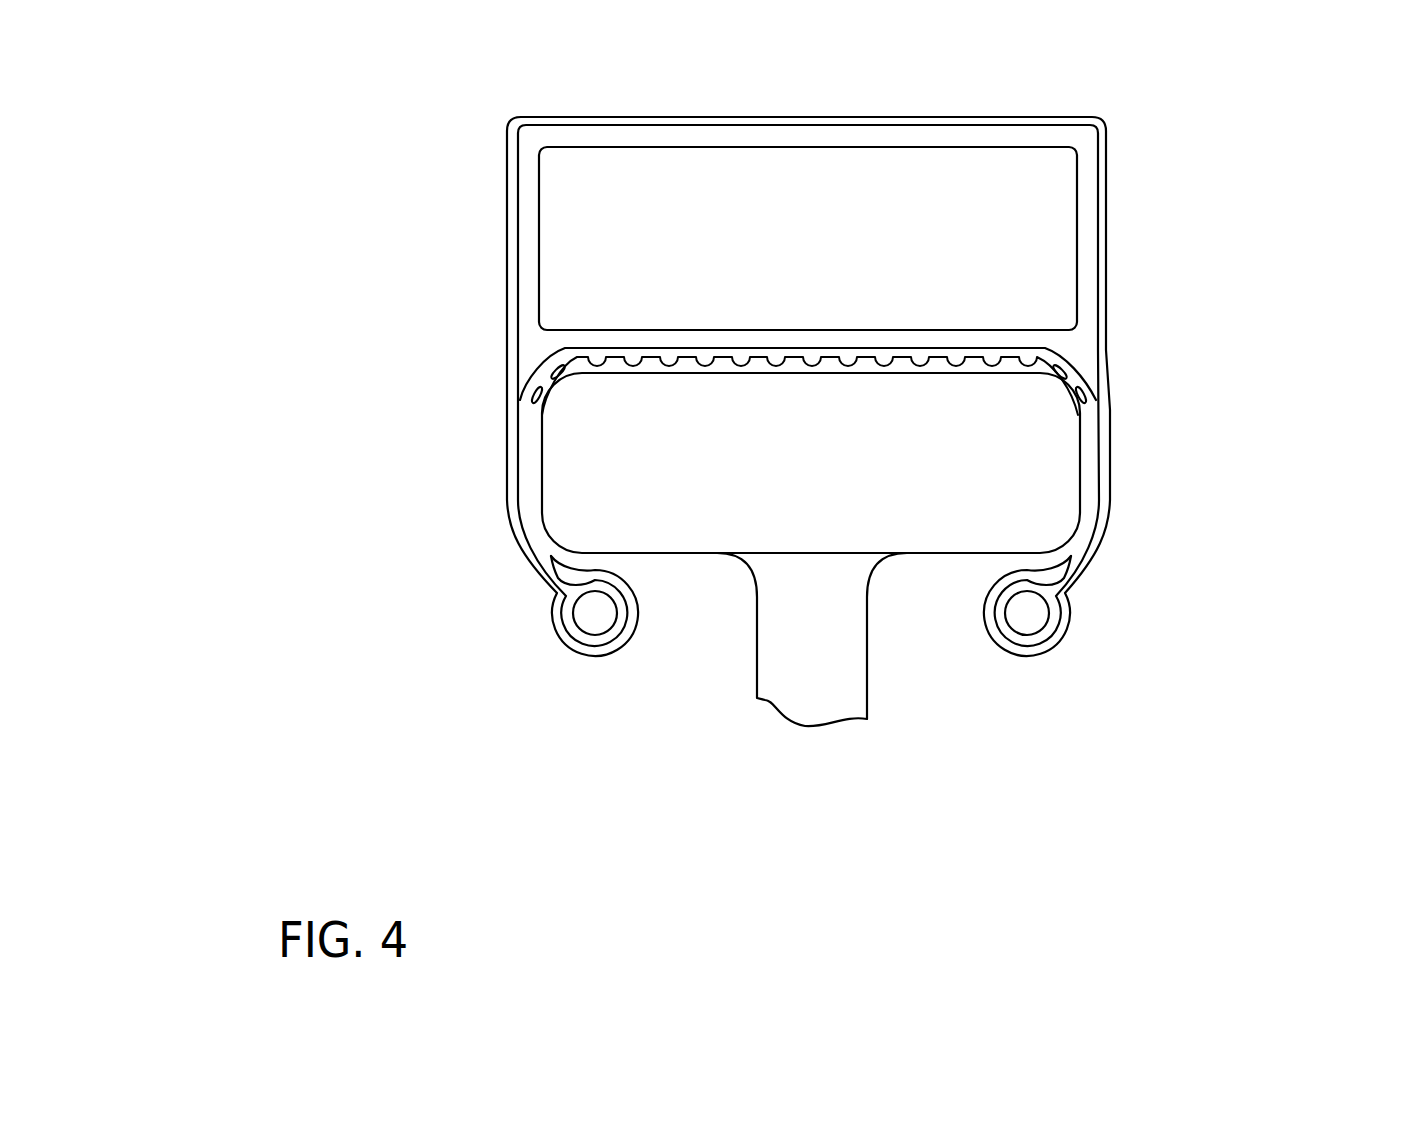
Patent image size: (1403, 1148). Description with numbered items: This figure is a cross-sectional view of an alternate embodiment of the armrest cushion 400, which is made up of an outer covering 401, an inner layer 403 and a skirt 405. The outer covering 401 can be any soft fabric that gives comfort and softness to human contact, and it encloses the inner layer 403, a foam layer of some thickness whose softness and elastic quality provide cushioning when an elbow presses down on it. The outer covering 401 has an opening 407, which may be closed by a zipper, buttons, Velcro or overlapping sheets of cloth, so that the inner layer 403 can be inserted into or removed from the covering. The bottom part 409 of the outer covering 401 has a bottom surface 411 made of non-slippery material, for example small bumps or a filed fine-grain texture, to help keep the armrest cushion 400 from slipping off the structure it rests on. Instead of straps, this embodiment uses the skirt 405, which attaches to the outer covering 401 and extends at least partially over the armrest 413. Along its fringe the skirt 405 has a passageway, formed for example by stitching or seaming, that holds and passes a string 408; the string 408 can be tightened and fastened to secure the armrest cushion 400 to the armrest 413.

The armrest cushion 400 is at (1140, 227).
The outer covering 401 is at (510, 235).
The inner layer 403 is at (808, 238).
The skirt 405 is at (1108, 486).
The opening 407 is at (1073, 363).
The string 408 is at (1027, 612).
The bottom part 409 is at (545, 364).
The bottom surface 411 is at (583, 363).
The armrest 413 is at (842, 663).